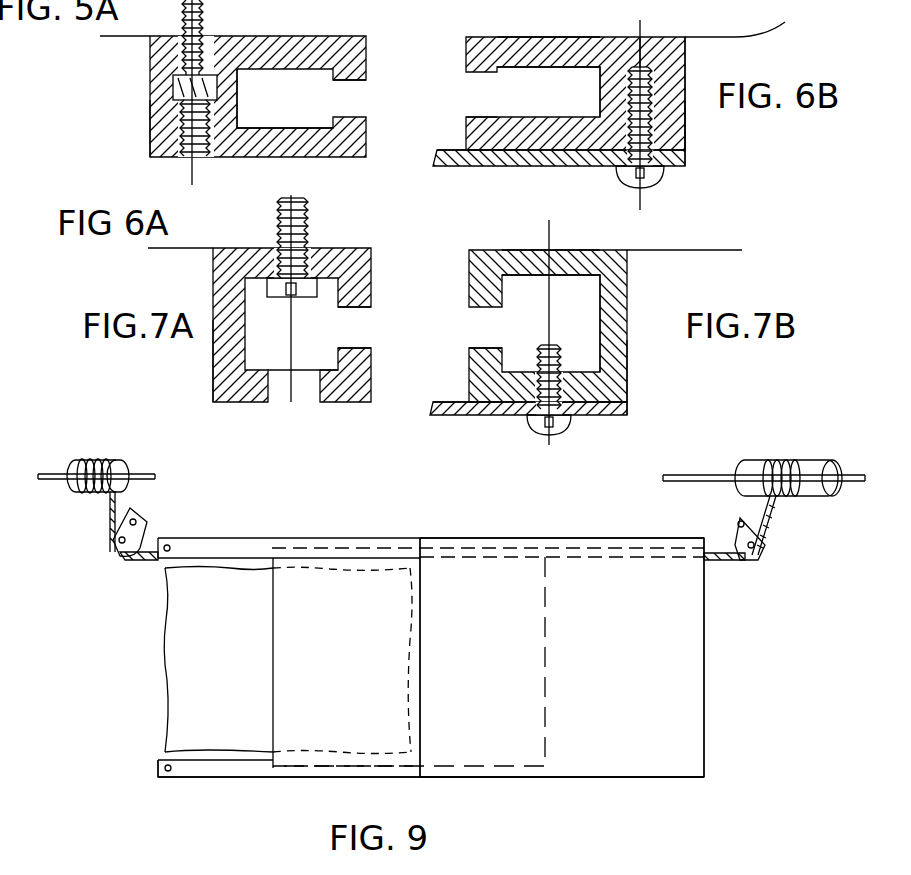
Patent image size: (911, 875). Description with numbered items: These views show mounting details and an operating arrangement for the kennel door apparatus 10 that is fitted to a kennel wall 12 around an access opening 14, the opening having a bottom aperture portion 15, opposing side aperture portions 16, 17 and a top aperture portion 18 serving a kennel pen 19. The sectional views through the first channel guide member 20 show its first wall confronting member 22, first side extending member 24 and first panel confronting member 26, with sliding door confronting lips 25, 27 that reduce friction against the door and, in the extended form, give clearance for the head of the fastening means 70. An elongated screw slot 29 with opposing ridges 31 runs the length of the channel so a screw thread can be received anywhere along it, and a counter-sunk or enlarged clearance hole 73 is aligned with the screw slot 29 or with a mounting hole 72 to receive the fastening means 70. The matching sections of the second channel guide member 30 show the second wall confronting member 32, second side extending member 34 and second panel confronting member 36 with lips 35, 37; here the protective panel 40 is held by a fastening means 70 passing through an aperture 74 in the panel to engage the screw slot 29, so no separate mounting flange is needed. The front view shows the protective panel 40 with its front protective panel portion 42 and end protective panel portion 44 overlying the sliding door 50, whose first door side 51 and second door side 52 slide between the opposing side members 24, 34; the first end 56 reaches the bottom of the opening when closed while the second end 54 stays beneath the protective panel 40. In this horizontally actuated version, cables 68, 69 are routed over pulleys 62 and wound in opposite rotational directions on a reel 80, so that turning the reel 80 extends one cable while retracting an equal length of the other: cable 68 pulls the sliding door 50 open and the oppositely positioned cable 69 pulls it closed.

In FIG. 9, the kennel door apparatus 10 is at (537, 784).
In FIG. 6A, the kennel wall 12 is at (130, 38).
In FIG. 6B, the kennel wall 12 is at (756, 18).
In FIG. 7A, the kennel wall 12 is at (183, 250).
In FIG. 7B, the kennel wall 12 is at (660, 252).
In FIG. 9, the access opening 14 is at (195, 652).
In FIG. 9, the bottom aperture portion 15 is at (203, 752).
In FIG. 9, the side aperture portion 16 is at (168, 613).
In FIG. 9, the side aperture portion 17 is at (412, 598).
In FIG. 9, the top aperture portion 18 is at (248, 568).
In FIG. 9, the kennel pen 19 is at (202, 712).
In FIG. 6A, the first channel guide member 20 is at (145, 85).
In FIG. 7A, the first channel guide member 20 is at (203, 295).
In FIG. 9, the first channel guide member 20 is at (343, 550).
In FIG. 6A, the first wall confronting member 22 is at (290, 36).
In FIG. 7A, the first wall confronting member 22 is at (265, 249).
In FIG. 6A, the first side extending member 24 is at (150, 135).
In FIG. 7A, the first side extending member 24 is at (213, 380).
In FIG. 6A, the sliding door confronting lip 25 is at (340, 80).
In FIG. 7A, the sliding door confronting lip 25 is at (340, 308).
In FIG. 6A, the first panel confronting member 26 is at (243, 158).
In FIG. 7A, the first panel confronting member 26 is at (345, 400).
In FIG. 9, the first panel confronting member 26 is at (323, 548).
In FIG. 6A, the sliding door confronting lip 27 is at (335, 112).
In FIG. 7A, the sliding door confronting lip 27 is at (345, 348).
In FIG. 6A, the screw slot 29 is at (188, 158).
In FIG. 6B, the screw slot 29 is at (690, 62).
In FIG. 6B, the second channel guide member 30 is at (700, 104).
In FIG. 7B, the second channel guide member 30 is at (630, 333).
In FIG. 9, the second channel guide member 30 is at (228, 767).
In FIG. 6B, the opposing ridges 31 is at (640, 67).
In FIG. 6B, the second wall confronting member 32 is at (503, 37).
In FIG. 7B, the second wall confronting member 32 is at (515, 250).
In FIG. 6B, the second side extending member 34 is at (688, 125).
In FIG. 7B, the second side extending member 34 is at (630, 380).
In FIG. 6B, the sliding door confronting lip 35 is at (480, 73).
In FIG. 7B, the sliding door confronting lip 35 is at (470, 310).
In FIG. 6B, the second panel confronting member 36 is at (515, 166).
In FIG. 7B, the second panel confronting member 36 is at (482, 415).
In FIG. 9, the second panel confronting member 36 is at (312, 768).
In FIG. 6B, the sliding door confronting lip 37 is at (468, 110).
In FIG. 7B, the sliding door confronting lip 37 is at (498, 347).
In FIG. 6B, the protective panel 40 is at (436, 140).
In FIG. 7B, the protective panel 40 is at (450, 402).
In FIG. 9, the protective panel 40 is at (630, 745).
In FIG. 9, the front protective panel portion 42 is at (655, 615).
In FIG. 9, the end protective panel portion 44 is at (704, 707).
In FIG. 9, the sliding door 50 is at (272, 682).
In FIG. 9, the first door side 51 is at (447, 548).
In FIG. 9, the second door side 52 is at (490, 772).
In FIG. 9, the second end 54 is at (548, 660).
In FIG. 9, the first end 56 is at (273, 622).
In FIG. 9, the pulley 62 is at (145, 525).
In FIG. 9, the cable 68 is at (152, 478).
In FIG. 9, the cable 69 is at (762, 520).
In FIG. 6A, the fastening means 70 is at (178, 84).
In FIG. 6B, the fastening means 70 is at (656, 186).
In FIG. 7A, the fastening means 70 is at (308, 296).
In FIG. 7B, the fastening means 70 is at (572, 427).
In FIG. 6A, the panel aperture 72 is at (200, 40).
In FIG. 6B, the panel aperture 72 is at (633, 168).
In FIG. 7A, the panel aperture 72 is at (308, 246).
In FIG. 7B, the panel aperture 72 is at (630, 410).
In FIG. 6A, the counter-sunk hole 73 is at (205, 158).
In FIG. 7A, the counter-sunk hole 73 is at (290, 385).
In FIG. 9, the counter-sunk hole 73 is at (158, 773).
In FIG. 6B, the aperture 74 is at (688, 162).
In FIG. 7B, the aperture 74 is at (548, 345).
In FIG. 9, the reel 80 is at (70, 458).